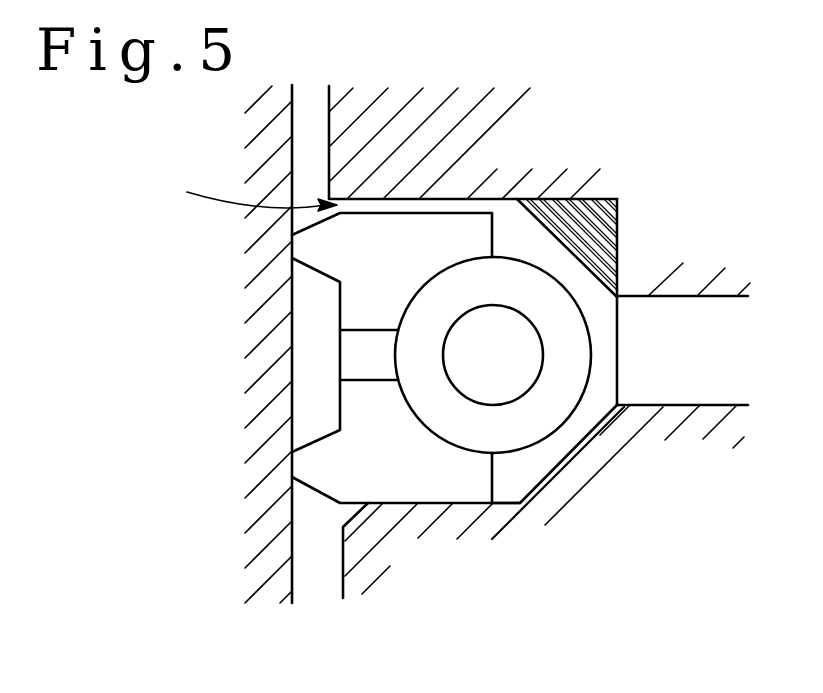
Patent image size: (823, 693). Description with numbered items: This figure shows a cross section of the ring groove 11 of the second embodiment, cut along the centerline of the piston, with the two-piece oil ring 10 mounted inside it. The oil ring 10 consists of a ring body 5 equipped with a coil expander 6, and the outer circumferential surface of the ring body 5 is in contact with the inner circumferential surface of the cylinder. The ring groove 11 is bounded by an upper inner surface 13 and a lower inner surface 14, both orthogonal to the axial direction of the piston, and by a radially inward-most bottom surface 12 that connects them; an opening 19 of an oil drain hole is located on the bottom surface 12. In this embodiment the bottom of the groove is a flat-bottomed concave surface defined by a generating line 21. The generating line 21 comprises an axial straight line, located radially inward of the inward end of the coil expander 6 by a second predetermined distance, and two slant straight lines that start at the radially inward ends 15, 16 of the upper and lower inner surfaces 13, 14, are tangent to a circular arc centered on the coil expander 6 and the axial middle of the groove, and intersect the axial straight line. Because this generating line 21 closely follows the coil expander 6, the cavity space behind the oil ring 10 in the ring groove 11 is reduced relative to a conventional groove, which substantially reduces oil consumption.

The ring body 5 is at (452, 199).
The coil expander 6 is at (567, 200).
The two-piece oil ring 10 is at (315, 492).
The ring groove 11 is at (242, 194).
The bottom surface 12 is at (602, 278).
The upper inner surface 13 is at (405, 198).
The lower inner surface 14 is at (426, 498).
The radially inward end of the upper inner surface 15 is at (517, 199).
The radially inward end of the lower inner surface 16 is at (520, 506).
The opening 19 is at (616, 338).
The generating line 21 is at (549, 473).